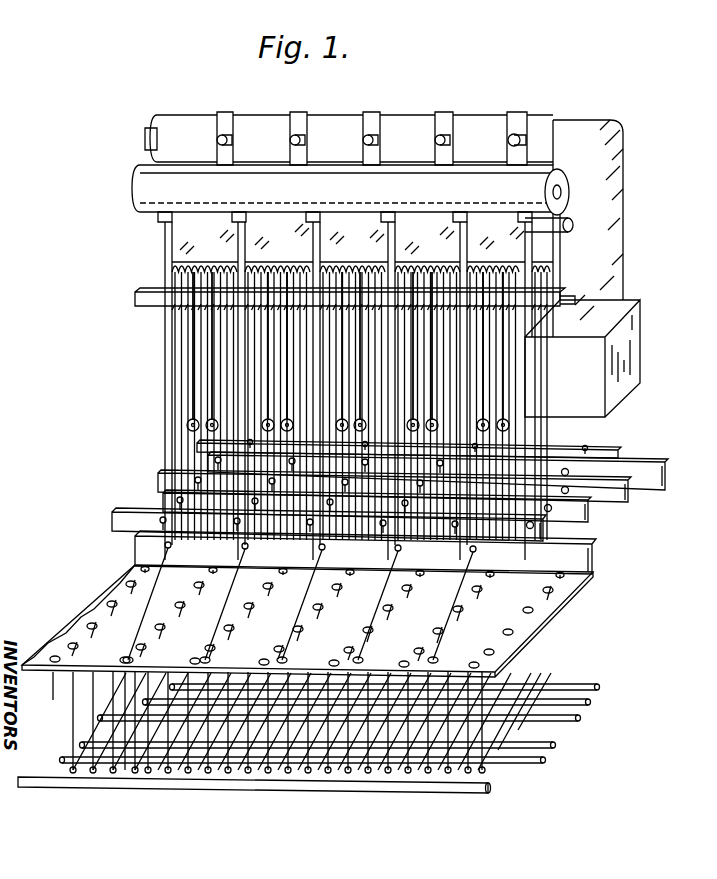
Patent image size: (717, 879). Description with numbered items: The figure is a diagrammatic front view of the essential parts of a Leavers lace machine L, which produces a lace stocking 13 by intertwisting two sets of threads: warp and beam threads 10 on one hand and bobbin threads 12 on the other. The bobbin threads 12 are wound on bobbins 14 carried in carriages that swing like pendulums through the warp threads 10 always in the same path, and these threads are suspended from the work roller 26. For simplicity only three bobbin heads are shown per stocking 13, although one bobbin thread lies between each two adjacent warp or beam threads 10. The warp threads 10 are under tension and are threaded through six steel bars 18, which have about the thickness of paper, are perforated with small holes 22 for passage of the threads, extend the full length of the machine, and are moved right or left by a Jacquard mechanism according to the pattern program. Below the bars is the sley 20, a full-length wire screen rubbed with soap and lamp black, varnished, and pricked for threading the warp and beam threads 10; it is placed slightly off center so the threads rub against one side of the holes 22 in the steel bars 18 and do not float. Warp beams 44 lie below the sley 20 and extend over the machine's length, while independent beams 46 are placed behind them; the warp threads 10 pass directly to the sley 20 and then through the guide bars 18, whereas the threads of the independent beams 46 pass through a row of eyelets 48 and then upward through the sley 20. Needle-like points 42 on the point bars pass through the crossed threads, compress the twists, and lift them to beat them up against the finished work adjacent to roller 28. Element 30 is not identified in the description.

The Leavers lace machine L is at (632, 235).
The warp beam rollers 30 is at (492, 130).
The roller 28 is at (570, 190).
The work roller 26 is at (568, 232).
The stocking 13 is at (182, 243).
The needle-like points 42 is at (162, 306).
The warp threads 10 is at (165, 403).
The bobbin threads 12 is at (503, 398).
The bobbins 14 is at (446, 423).
The small holes 22 is at (588, 467).
The steel bars 18 is at (647, 482).
The sley 20 is at (553, 602).
The independent beams 46 is at (598, 690).
The warp beams 44 is at (556, 755).
The eyelets 48 is at (485, 780).